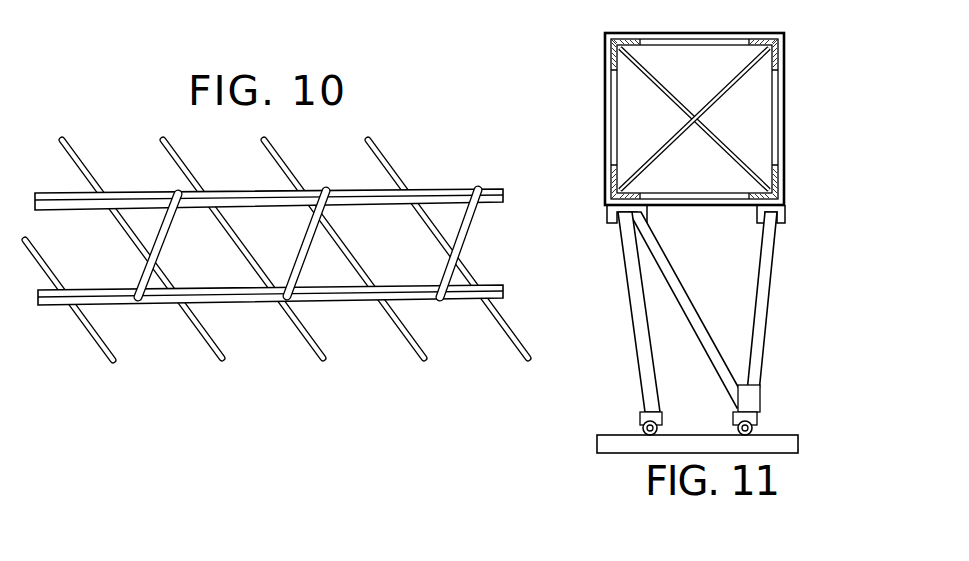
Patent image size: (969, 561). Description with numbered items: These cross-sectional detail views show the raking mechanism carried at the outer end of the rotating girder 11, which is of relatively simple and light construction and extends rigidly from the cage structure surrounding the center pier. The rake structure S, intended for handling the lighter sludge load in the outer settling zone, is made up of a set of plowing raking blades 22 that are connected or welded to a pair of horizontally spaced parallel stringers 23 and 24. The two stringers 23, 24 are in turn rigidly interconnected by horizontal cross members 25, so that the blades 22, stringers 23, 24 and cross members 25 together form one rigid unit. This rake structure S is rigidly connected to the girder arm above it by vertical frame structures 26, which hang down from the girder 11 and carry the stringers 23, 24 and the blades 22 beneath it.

In FIG. 10, the rake structure S is at (190, 362).
In FIG. 11, the rotating girder 11 is at (585, 69).
In FIG. 10, the raking blades 22 is at (395, 165).
In FIG. 11, the raking blades 22 is at (625, 447).
In FIG. 10, the stringer 23 is at (248, 293).
In FIG. 11, the stringer 23 is at (643, 431).
In FIG. 10, the stringer 24 is at (233, 200).
In FIG. 11, the stringer 24 is at (753, 431).
In FIG. 10, the horizontal cross members 25 is at (165, 247).
In FIG. 11, the vertical frame structures 26 is at (758, 323).